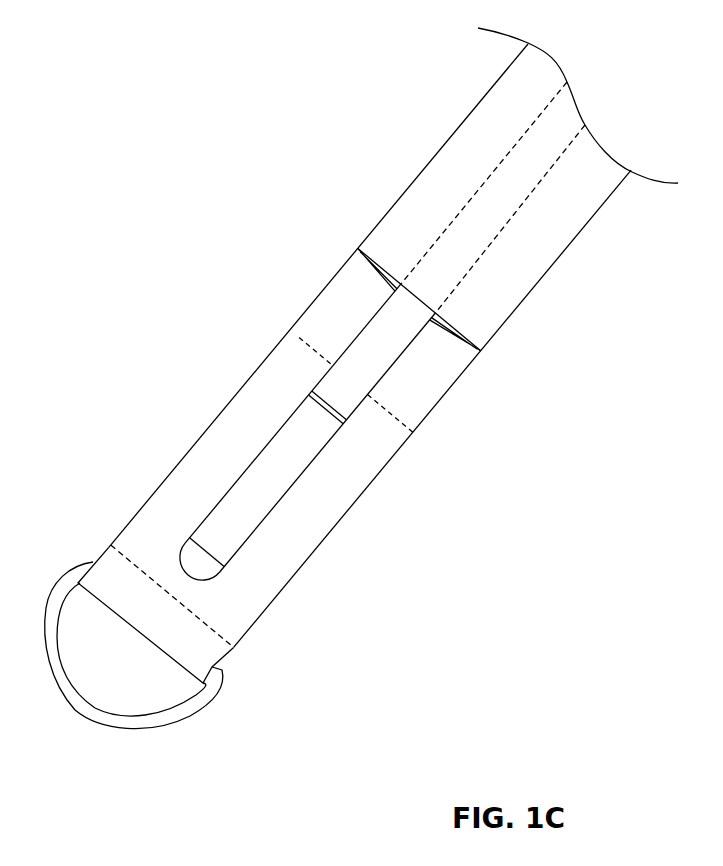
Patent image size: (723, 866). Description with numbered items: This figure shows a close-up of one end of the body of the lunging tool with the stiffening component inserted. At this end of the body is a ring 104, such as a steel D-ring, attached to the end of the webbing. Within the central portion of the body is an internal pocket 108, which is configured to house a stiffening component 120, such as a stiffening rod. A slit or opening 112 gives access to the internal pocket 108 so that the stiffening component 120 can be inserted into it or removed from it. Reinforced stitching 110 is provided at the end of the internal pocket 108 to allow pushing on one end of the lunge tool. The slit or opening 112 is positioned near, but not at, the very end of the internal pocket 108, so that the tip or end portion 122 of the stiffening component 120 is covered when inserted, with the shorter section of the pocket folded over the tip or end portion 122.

The ring 104 is at (237, 693).
The internal pocket 108 is at (553, 227).
The reinforced stitching 110 is at (302, 337).
The slit or opening 112 is at (382, 270).
The stiffening component 120 is at (385, 342).
The tip or end portion 122 is at (288, 495).